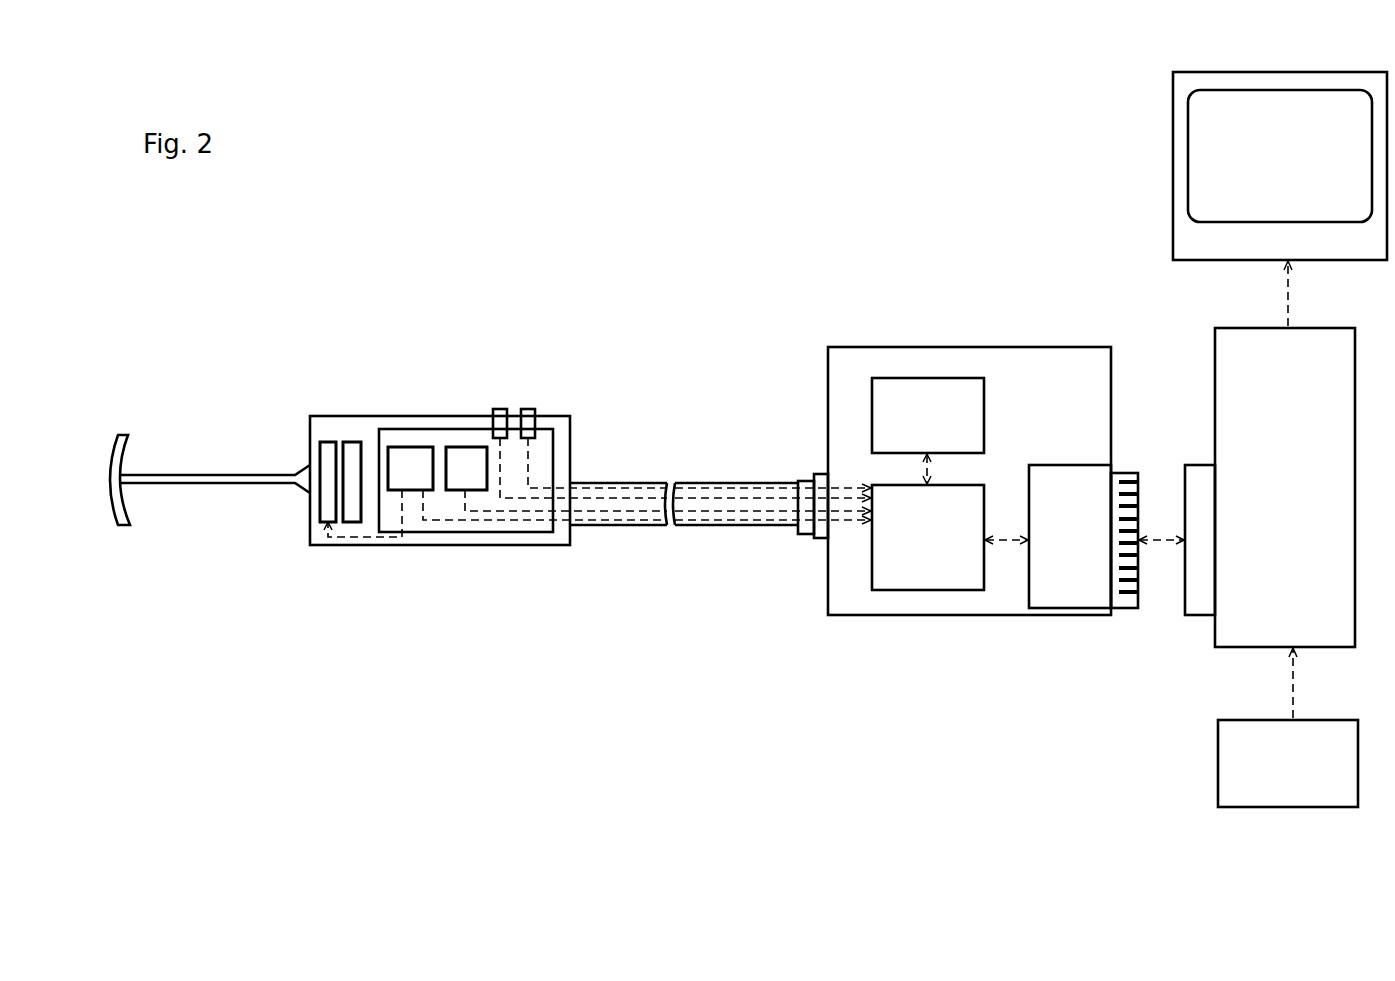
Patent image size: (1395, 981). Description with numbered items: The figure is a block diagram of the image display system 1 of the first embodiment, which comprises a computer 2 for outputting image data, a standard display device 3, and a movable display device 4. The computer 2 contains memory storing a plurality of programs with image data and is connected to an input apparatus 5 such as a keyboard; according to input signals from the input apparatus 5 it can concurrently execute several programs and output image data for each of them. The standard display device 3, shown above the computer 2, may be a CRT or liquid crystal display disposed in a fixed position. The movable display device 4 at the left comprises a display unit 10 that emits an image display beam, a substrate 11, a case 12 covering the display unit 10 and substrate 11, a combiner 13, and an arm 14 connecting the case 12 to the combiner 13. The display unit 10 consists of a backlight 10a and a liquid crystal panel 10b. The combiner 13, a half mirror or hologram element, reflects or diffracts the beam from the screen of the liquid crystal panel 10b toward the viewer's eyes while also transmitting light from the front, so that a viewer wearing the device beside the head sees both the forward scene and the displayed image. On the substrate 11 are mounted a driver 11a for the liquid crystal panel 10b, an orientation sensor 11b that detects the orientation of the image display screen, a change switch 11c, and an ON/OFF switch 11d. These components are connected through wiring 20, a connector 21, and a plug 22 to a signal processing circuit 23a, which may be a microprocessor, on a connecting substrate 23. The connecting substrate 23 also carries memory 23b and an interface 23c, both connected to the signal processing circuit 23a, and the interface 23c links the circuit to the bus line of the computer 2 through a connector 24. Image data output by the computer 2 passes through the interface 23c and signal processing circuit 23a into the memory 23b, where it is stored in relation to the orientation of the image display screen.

The image display system 1 is at (578, 422).
The computer 2 is at (1225, 632).
The standard display device 3 is at (1198, 167).
The movable display device 4 is at (408, 417).
The input apparatus 5 is at (1230, 765).
The display unit 10 is at (297, 347).
The backlight 10a is at (330, 445).
The liquid crystal panel 10b is at (353, 448).
The substrate 11 is at (447, 532).
The driver 11a is at (417, 462).
The orientation sensor 11b is at (465, 462).
The change switch 11c is at (503, 412).
The ON/OFF switch 11d is at (532, 412).
The case 12 is at (503, 545).
The combiner 13 is at (125, 507).
The arm 14 is at (247, 485).
The wiring 20 is at (647, 483).
The connector 21 is at (801, 535).
The plug 22 is at (822, 540).
The connecting substrate 23 is at (887, 612).
The signal processing circuit 23a is at (950, 575).
The memory 23b is at (912, 387).
The interface 23c is at (1077, 598).
The connector 24 is at (1200, 472).